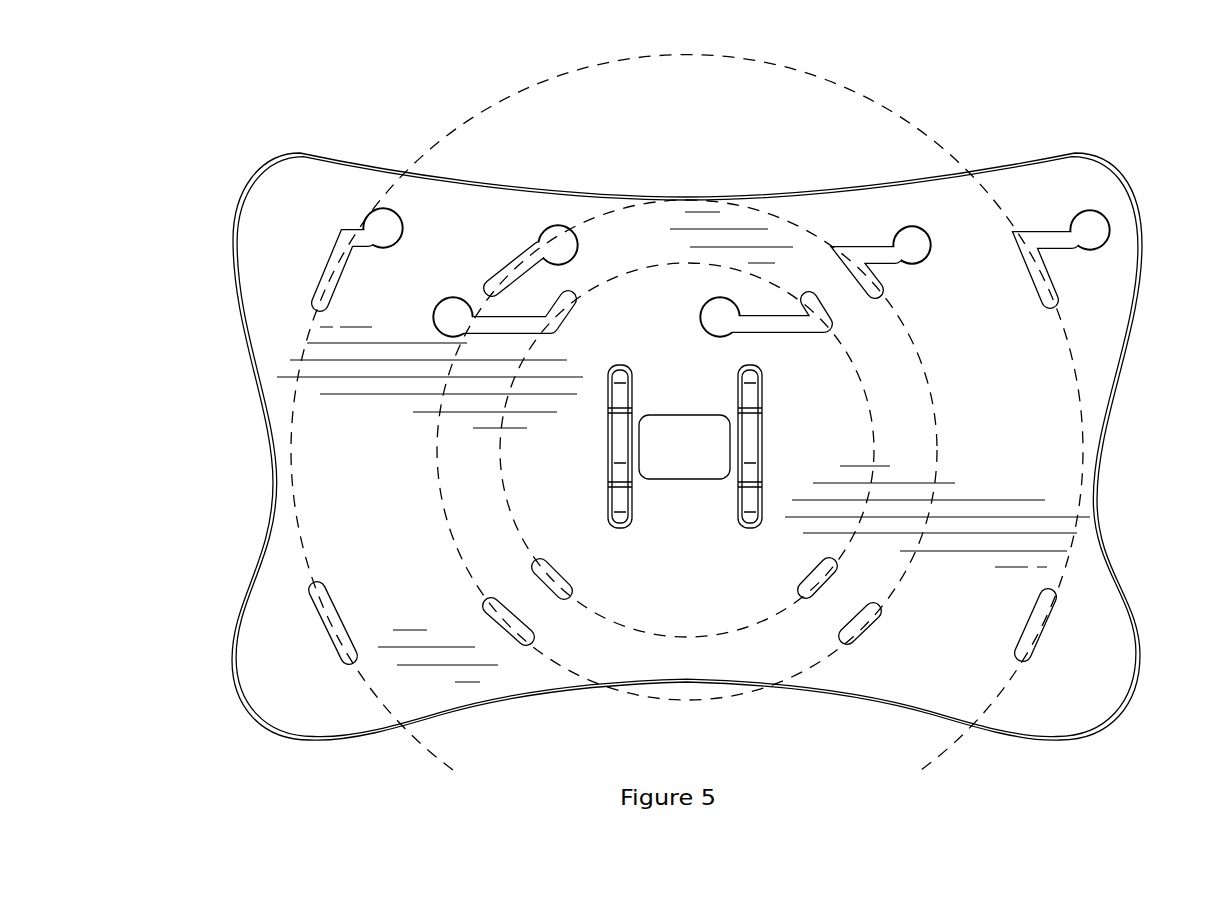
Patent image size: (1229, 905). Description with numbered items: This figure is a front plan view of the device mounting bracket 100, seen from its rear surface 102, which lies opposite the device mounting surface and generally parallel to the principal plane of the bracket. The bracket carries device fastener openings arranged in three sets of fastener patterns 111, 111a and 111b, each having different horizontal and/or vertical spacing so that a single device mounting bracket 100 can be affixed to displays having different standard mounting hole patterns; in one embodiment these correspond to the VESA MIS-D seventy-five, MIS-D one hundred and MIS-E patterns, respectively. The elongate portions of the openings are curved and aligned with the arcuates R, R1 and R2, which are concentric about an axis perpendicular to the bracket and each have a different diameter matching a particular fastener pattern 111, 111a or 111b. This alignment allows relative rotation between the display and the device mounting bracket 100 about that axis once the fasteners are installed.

The device mounting bracket 100 is at (1115, 87).
The rear surface 102 is at (1082, 180).
The fastener pattern 111 is at (797, 300).
The fastener pattern 111a is at (510, 270).
The fastener pattern 111b is at (307, 600).
The arcuate R is at (687, 196).
The arcuate R1 is at (645, 267).
The arcuate R2 is at (852, 92).